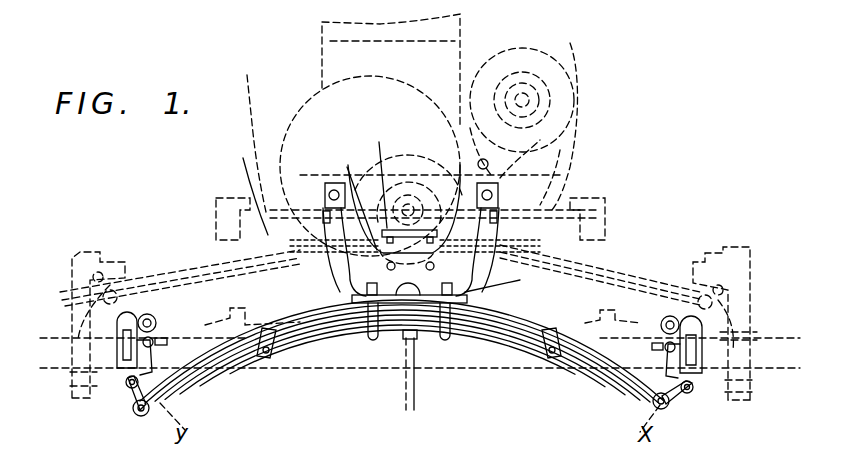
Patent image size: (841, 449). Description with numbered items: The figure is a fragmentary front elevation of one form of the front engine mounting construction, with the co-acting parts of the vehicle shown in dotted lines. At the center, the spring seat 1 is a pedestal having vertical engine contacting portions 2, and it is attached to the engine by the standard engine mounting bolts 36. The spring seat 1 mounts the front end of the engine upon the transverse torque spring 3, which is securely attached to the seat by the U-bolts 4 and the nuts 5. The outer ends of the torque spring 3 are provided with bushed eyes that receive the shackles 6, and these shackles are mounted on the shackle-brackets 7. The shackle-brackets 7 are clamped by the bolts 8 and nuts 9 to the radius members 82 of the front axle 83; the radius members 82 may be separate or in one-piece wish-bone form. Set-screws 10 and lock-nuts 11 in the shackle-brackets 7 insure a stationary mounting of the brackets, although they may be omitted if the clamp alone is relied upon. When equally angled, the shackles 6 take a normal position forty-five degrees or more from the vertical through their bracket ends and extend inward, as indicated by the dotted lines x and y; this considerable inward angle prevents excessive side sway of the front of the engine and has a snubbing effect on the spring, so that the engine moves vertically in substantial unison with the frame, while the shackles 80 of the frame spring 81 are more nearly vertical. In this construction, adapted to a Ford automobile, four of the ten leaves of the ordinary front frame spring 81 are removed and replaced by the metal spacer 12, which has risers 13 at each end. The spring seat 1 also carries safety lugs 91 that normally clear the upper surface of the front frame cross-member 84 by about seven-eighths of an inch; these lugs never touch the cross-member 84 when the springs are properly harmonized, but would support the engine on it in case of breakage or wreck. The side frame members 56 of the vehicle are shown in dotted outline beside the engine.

The spring seat 1 is at (484, 276).
The engine contacting portions 2 is at (325, 182).
The torque spring 3 is at (256, 364).
The U-bolts 4 is at (371, 342).
The nuts 5 is at (352, 293).
The shackles 6 is at (140, 403).
The shackle-brackets 7 is at (125, 348).
The bolts 8 is at (130, 318).
The nuts 9 is at (152, 322).
The set-screws 10 is at (165, 341).
The lock-nuts 11 is at (133, 378).
The metal spacer 12 is at (372, 172).
The risers 13 is at (351, 196).
The engine mounting bolts 36 is at (328, 195).
The side frame members 56 is at (216, 200).
The shackles 80 is at (108, 289).
The frame spring 81 is at (186, 290).
The radius members 82 is at (236, 318).
The front axle 83 is at (308, 370).
The front frame cross-member 84 is at (244, 184).
The safety lugs 91 is at (322, 218).